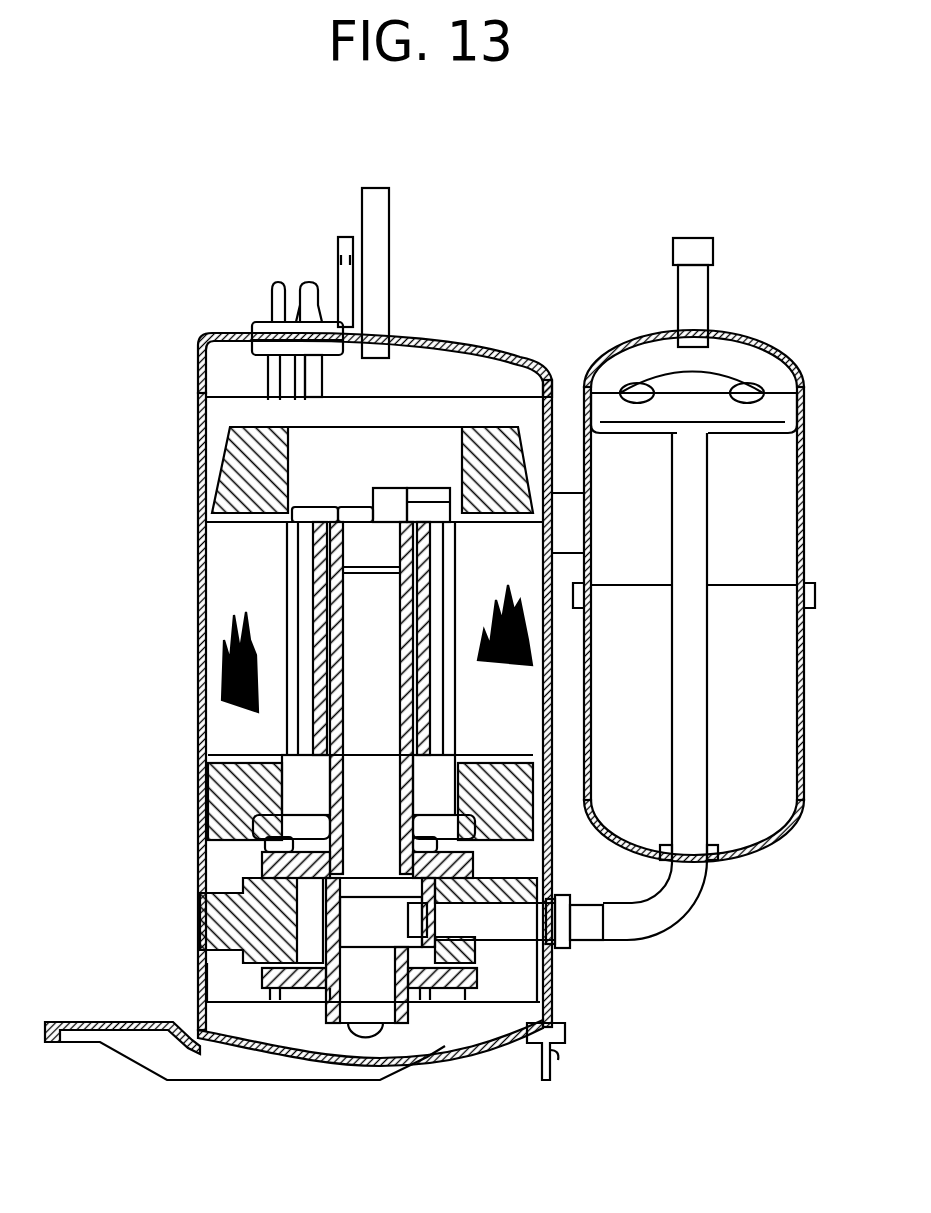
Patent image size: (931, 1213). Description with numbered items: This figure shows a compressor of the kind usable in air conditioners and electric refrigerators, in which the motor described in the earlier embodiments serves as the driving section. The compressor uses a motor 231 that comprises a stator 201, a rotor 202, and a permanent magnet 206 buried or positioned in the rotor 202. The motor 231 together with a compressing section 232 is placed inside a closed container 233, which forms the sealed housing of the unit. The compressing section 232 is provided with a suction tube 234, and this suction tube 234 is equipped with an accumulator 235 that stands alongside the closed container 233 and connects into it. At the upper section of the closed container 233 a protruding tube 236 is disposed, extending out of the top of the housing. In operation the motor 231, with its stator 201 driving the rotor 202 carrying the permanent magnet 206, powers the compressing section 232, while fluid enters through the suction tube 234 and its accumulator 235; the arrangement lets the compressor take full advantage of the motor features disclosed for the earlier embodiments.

The stator 201 is at (217, 693).
The rotor 202 is at (290, 650).
The permanent magnet 206 is at (327, 573).
The motor 231 is at (196, 759).
The compressing section 232 is at (245, 883).
The closed container 233 is at (200, 393).
The suction tube 234 is at (553, 950).
The accumulator 235 is at (733, 813).
The protruding tube 236 is at (373, 258).